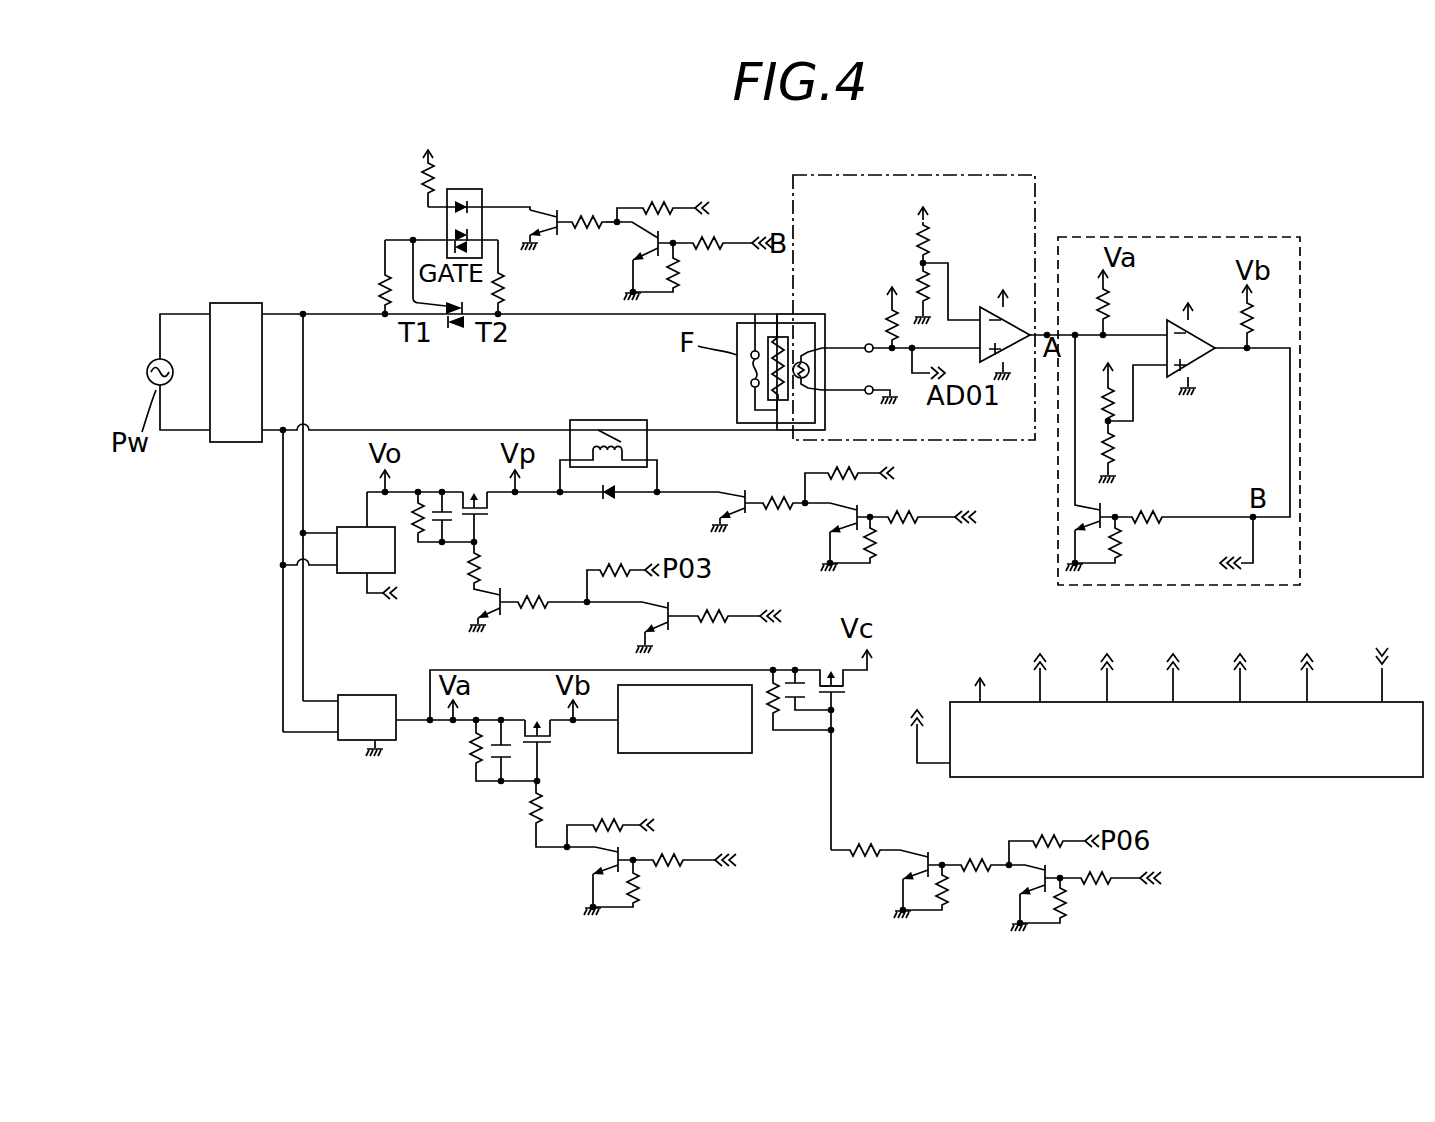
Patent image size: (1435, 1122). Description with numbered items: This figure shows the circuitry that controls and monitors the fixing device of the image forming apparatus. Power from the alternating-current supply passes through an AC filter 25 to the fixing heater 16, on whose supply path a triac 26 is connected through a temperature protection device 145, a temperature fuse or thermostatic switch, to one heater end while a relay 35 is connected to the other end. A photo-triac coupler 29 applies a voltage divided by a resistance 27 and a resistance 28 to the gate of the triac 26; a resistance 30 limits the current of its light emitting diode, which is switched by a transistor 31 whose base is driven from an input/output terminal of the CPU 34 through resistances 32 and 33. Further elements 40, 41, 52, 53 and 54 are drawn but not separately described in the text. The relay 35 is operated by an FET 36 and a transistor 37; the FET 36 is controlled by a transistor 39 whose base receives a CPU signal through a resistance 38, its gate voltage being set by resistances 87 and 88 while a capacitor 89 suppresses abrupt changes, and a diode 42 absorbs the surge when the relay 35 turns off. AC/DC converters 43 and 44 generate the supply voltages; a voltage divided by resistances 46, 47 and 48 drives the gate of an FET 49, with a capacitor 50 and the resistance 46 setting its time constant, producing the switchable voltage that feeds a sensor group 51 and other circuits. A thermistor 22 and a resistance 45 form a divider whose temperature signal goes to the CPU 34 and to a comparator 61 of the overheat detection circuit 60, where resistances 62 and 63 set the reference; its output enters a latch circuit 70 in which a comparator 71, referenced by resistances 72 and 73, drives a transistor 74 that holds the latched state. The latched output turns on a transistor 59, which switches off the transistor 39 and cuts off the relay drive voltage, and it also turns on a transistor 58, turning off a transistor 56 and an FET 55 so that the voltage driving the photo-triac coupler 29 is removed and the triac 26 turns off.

The fixing heater 16 is at (768, 332).
The thermistor 22 is at (818, 366).
The AC filter 25 is at (218, 445).
The triac 26 is at (456, 330).
The resistance 27 is at (382, 278).
The resistance 28 is at (505, 286).
The photo-triac coupler 29 is at (485, 190).
The resistance 30 is at (420, 182).
The transistor 31 is at (550, 210).
The resistance 32 is at (595, 216).
The resistance 33 is at (660, 206).
The engine control unit (CPU) 34 is at (1240, 778).
The relay 35 is at (590, 420).
The FET 36 is at (492, 510).
The transistor 37 is at (748, 520).
The resistance 38 is at (528, 610).
The transistor 39 is at (472, 620).
The resistor 40 is at (762, 500).
The resistor 41 is at (828, 478).
The diode 42 is at (612, 499).
The AC/DC converter 43 is at (348, 745).
The AC/DC converter 44 is at (356, 570).
The resistance 45 is at (884, 322).
The resistance 46 is at (472, 762).
The resistance 47 is at (533, 820).
The resistance 48 is at (606, 822).
The FET (first switch) 49 is at (552, 745).
The capacitor 50 is at (498, 770).
The sensor group 51 is at (735, 755).
The transistor 52 is at (602, 876).
The transistor 53 is at (830, 530).
The resistor 54 is at (634, 272).
The FET (second switch) 55 is at (845, 700).
The transistor 56 is at (908, 882).
The transistor 58 is at (1025, 893).
The transistor 59 is at (648, 640).
The overheat detection circuit 60 is at (1040, 225).
The comparator 61 is at (1007, 360).
The resistance 62 is at (930, 242).
The resistance 63 is at (932, 288).
The latch circuit 70 is at (1180, 238).
The comparator 71 is at (1208, 368).
The resistance 72 is at (1120, 406).
The resistance 73 is at (1120, 448).
The transistor 74 is at (1112, 506).
The resistance 87 is at (418, 518).
The resistance 88 is at (486, 560).
The capacitor 89 is at (448, 510).
The temperature protection device 145 is at (755, 374).